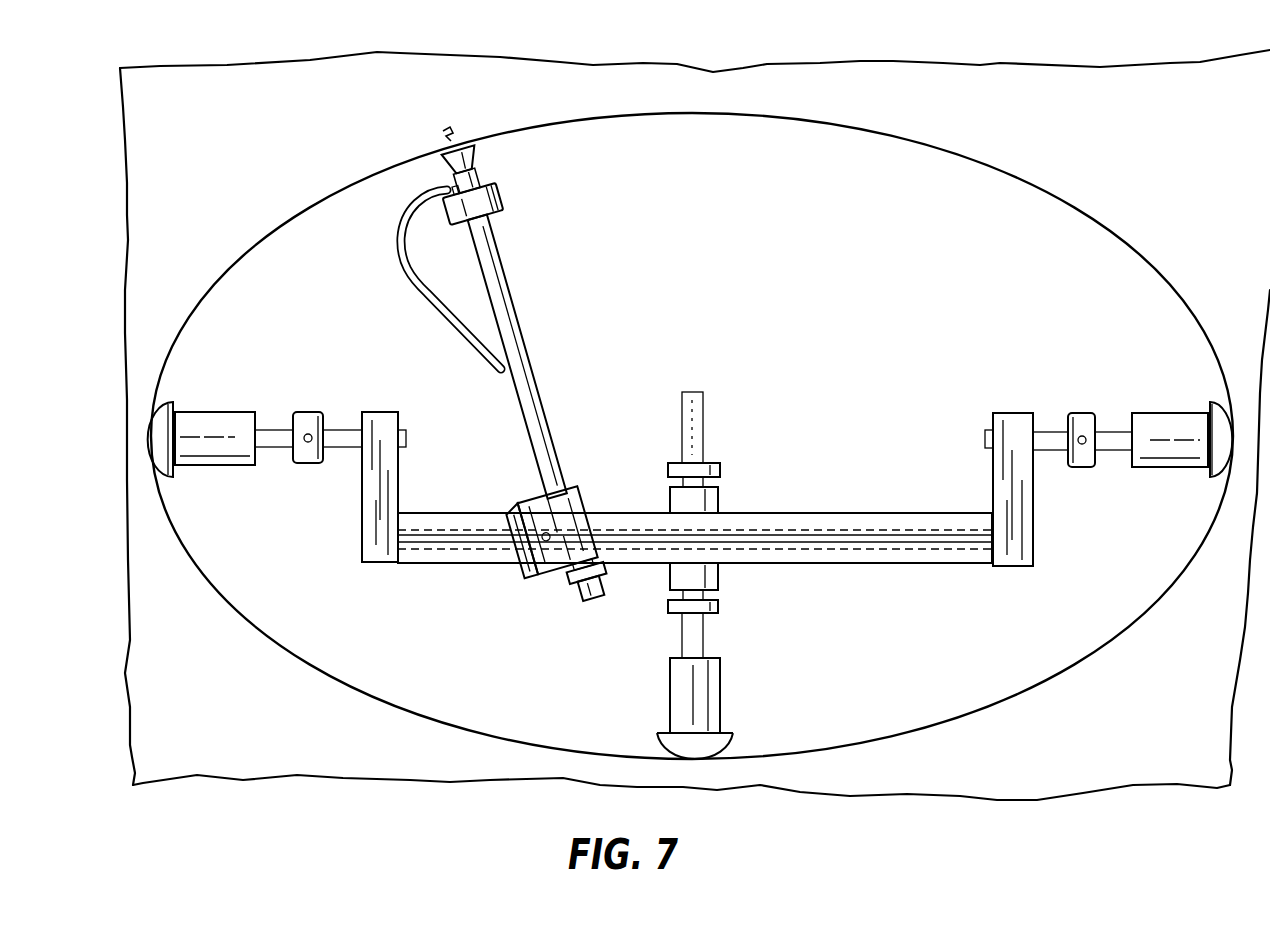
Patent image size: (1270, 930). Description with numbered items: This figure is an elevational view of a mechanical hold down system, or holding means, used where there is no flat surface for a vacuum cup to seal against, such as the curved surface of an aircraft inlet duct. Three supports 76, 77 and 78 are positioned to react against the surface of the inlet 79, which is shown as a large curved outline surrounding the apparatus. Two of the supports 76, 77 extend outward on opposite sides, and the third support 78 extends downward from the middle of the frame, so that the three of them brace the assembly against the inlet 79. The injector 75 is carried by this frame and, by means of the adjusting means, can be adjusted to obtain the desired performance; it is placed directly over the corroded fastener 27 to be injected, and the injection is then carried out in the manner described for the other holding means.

The corroded fastener 27 is at (452, 135).
The injector 75 is at (477, 176).
The support 76 is at (228, 418).
The support 77 is at (1153, 413).
The support 78 is at (717, 712).
The inlet 79 is at (1097, 230).